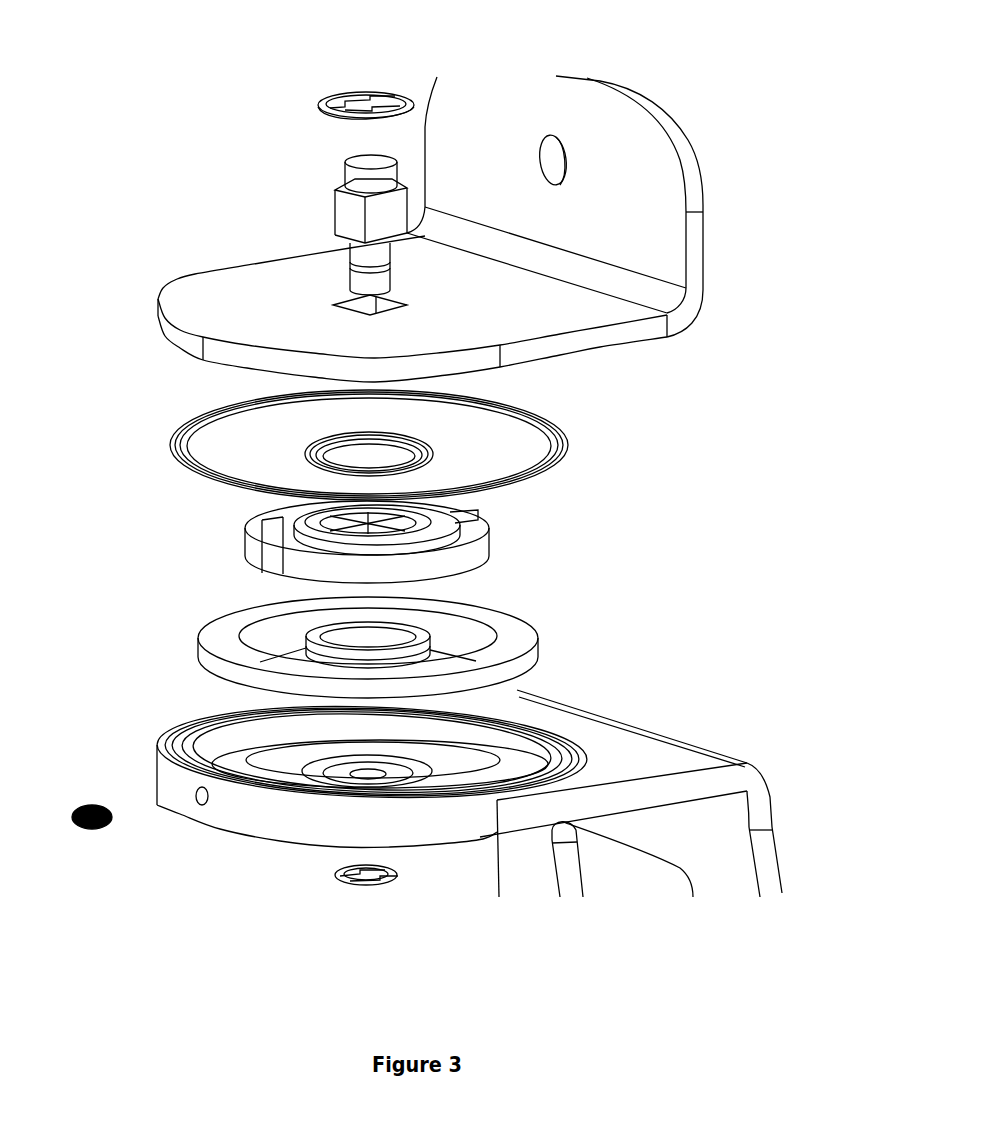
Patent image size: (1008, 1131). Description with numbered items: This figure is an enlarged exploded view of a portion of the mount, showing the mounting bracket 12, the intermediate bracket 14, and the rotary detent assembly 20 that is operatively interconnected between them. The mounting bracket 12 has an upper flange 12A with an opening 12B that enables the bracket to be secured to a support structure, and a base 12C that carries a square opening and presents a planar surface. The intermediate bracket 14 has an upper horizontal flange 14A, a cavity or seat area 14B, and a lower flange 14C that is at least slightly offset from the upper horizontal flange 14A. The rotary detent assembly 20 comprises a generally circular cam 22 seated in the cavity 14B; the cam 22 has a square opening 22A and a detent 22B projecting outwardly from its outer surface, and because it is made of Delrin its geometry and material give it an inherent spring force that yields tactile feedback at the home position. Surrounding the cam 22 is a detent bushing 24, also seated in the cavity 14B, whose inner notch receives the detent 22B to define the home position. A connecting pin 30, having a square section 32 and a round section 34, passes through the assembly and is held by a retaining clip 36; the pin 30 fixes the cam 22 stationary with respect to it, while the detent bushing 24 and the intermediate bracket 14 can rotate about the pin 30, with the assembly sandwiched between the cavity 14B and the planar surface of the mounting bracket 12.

The mounting bracket 12 is at (750, 197).
The upper flange 12A is at (625, 213).
The opening 12B is at (570, 150).
The base 12C is at (566, 310).
The intermediate bracket 14 is at (763, 738).
The upper horizontal flange 14A is at (647, 757).
The cavity or seat area 14B is at (220, 742).
The lower flange 14C is at (725, 855).
The rotary detent assembly 20 is at (615, 550).
The cam 22 is at (493, 545).
The square opening 22A is at (327, 527).
The detent 22B is at (257, 568).
The detent bushing 24 is at (552, 638).
The connecting pin 30 is at (210, 172).
The square section 32 is at (333, 195).
The round section 34 is at (333, 252).
The retaining clip 36 is at (333, 98).